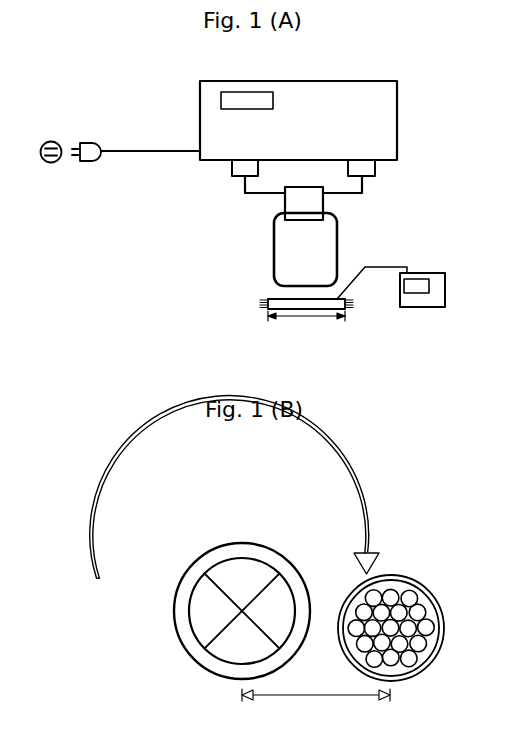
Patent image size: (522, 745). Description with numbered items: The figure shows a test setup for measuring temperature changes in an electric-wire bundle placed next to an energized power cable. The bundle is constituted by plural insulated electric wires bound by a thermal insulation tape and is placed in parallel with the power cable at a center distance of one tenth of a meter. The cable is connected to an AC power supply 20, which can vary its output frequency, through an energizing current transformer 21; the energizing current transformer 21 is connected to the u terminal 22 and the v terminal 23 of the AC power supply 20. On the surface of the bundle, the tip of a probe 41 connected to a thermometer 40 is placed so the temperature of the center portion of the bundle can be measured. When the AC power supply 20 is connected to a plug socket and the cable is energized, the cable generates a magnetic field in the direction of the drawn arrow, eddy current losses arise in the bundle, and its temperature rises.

The AC power supply 20 is at (398, 118).
The energizing current transformer 21 is at (324, 200).
The u terminal 22 is at (236, 171).
The v terminal 23 is at (376, 166).
The thermometer 40 is at (446, 289).
The probe 41 is at (378, 266).